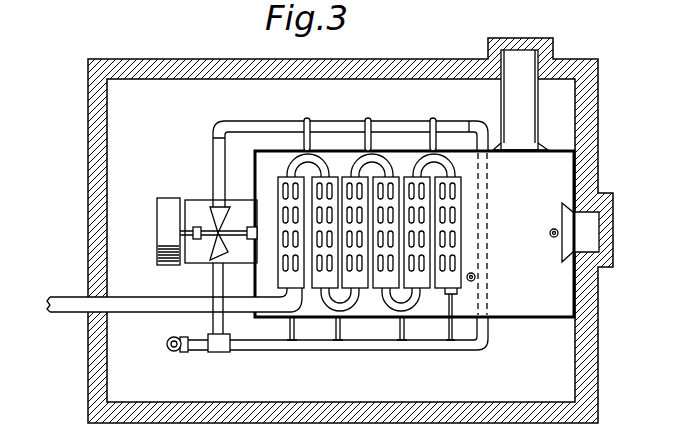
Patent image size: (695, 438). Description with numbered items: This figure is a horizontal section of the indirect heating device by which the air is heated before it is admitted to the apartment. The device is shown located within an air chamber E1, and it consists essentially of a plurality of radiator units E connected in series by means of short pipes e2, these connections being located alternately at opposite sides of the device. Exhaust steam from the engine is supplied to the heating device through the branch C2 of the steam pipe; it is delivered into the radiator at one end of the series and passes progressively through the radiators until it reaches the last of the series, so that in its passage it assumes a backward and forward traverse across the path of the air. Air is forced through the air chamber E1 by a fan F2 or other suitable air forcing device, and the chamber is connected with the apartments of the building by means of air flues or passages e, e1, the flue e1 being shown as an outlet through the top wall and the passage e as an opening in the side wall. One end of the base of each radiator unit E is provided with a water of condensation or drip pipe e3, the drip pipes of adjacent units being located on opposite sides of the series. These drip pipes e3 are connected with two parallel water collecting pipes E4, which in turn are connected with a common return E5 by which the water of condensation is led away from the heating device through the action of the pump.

The air flue e1 is at (555, 40).
The air flue e is at (574, 232).
The air chamber E1 is at (520, 321).
The steam pipe branch C2 is at (142, 308).
The radiator unit E is at (463, 251).
The short pipe e2 is at (351, 167).
The water collecting pipe E4 is at (353, 124).
The drip pipe e3 is at (437, 133).
The fan F2 is at (215, 228).
The common return E5 is at (198, 351).